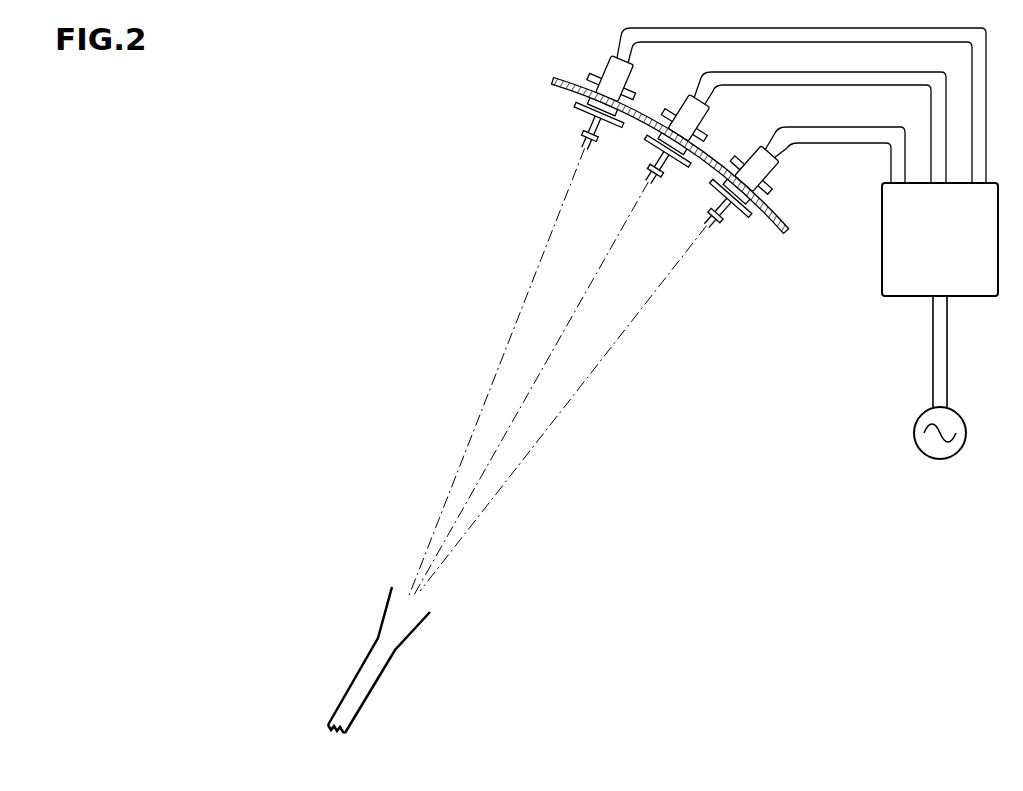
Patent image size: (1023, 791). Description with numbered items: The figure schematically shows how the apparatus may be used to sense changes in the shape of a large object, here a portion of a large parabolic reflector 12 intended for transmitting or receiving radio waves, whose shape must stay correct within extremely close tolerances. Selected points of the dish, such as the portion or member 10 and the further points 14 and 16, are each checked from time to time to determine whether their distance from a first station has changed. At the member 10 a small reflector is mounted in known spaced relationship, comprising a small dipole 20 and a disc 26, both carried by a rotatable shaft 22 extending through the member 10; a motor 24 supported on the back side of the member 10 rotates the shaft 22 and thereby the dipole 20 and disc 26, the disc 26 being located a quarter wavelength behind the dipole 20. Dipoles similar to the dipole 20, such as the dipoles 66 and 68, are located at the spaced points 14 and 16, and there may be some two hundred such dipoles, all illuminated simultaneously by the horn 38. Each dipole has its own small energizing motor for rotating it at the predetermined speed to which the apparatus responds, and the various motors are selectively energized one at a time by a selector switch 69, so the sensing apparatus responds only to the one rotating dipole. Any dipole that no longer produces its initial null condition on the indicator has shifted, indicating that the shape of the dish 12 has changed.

The member 10 is at (733, 162).
The parabolic reflector 12 is at (550, 73).
The point 14 is at (690, 166).
The point 16 is at (752, 217).
The dipole 20 is at (586, 150).
The rotatable shaft 22 is at (668, 160).
The motor 24 is at (682, 100).
The disc 26 is at (575, 105).
The horn 38 is at (380, 616).
The dipole 66 is at (650, 168).
The dipole 68 is at (717, 224).
The selector switch 69 is at (983, 284).